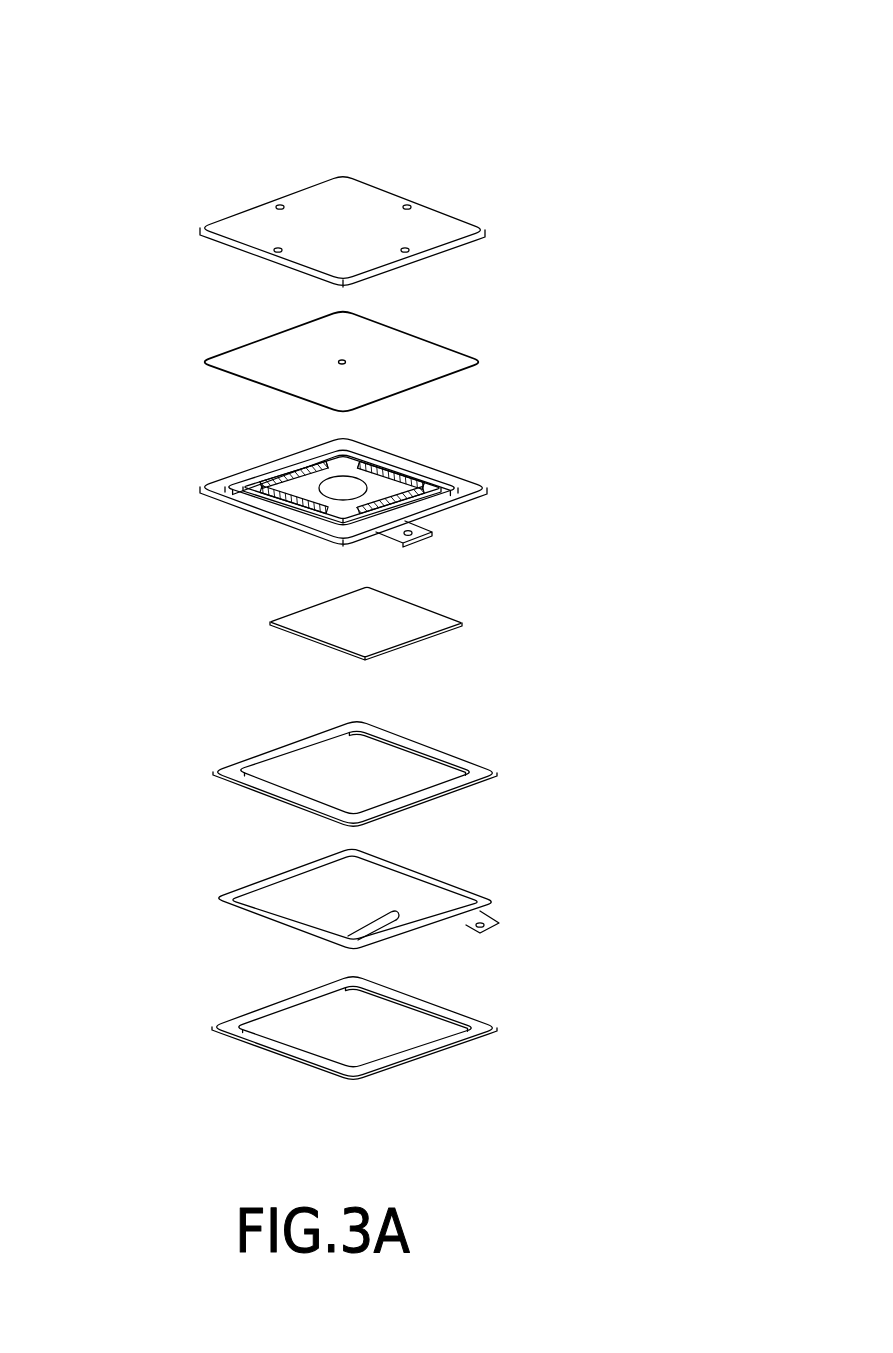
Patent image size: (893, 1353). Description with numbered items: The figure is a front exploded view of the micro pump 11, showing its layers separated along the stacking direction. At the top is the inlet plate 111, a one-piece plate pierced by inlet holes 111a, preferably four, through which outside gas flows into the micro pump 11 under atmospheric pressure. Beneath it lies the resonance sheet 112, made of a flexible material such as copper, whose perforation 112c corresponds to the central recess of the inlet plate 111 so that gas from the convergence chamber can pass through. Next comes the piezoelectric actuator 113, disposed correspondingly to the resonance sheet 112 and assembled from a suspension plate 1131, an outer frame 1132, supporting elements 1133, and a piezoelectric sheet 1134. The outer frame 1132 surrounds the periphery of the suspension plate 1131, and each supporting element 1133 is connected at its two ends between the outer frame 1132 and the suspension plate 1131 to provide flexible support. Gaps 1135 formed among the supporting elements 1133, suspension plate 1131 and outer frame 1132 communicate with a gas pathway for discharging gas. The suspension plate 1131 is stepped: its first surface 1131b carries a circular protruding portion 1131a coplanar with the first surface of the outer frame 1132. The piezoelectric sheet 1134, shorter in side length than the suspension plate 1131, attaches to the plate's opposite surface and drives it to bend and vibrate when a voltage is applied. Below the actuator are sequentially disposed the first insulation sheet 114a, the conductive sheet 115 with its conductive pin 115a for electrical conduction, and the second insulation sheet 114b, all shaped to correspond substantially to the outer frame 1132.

The micro pump 11 is at (572, 104).
The inlet plate 111 is at (369, 201).
The inlet hole 111a is at (279, 204).
The resonance sheet 112 is at (374, 347).
The perforation 112c is at (339, 360).
The piezoelectric actuator 113 is at (389, 535).
The suspension plate 1131 is at (340, 498).
The protruding portion 1131a is at (340, 482).
The first surface of the suspension plate 1131b is at (337, 511).
The outer frame 1132 is at (476, 493).
The supporting element 1133 is at (424, 528).
The piezoelectric sheet 1134 is at (434, 618).
The gap 1135 is at (461, 487).
The first insulation sheet 114a is at (498, 751).
The conductive sheet 115 is at (444, 890).
The conductive pin 115a is at (501, 924).
The second insulation sheet 114b is at (500, 1009).